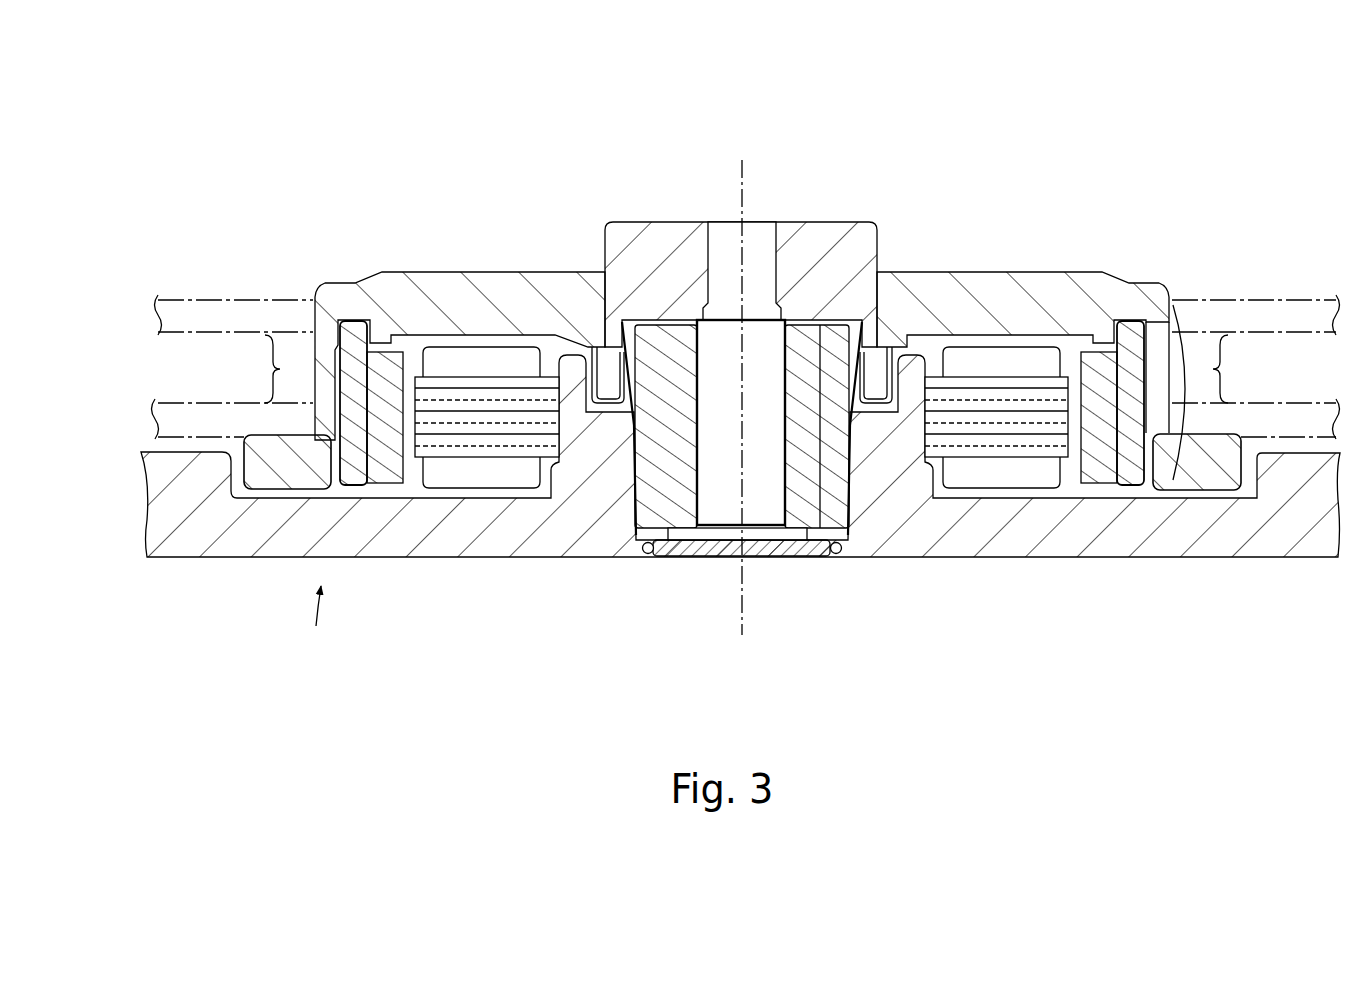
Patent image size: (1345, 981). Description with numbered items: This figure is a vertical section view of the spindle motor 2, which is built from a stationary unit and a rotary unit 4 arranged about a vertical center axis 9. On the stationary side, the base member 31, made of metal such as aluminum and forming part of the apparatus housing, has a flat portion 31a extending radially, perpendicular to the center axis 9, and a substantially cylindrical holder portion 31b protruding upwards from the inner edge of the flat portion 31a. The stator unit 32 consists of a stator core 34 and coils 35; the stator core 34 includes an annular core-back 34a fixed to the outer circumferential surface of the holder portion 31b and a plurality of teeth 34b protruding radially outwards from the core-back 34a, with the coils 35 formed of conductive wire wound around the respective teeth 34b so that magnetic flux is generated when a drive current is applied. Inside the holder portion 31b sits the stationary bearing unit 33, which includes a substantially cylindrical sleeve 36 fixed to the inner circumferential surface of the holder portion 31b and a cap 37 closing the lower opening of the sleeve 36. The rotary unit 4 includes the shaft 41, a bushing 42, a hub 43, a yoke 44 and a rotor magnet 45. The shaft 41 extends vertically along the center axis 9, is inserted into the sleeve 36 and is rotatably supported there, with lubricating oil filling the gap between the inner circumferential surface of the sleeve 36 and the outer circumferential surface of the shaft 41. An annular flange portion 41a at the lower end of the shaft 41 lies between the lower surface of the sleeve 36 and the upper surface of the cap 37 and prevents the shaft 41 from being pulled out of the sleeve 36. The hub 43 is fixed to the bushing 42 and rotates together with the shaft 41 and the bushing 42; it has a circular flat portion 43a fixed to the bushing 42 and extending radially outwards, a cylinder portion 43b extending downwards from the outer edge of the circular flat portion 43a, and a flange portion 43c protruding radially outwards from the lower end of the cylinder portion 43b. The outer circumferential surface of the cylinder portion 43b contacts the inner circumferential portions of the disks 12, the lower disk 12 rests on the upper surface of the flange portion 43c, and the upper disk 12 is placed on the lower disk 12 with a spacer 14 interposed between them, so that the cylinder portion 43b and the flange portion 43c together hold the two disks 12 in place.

The spindle motor 2 is at (336, 166).
The rotary unit 4 is at (518, 252).
The center axis 9 is at (740, 180).
The disk 12 is at (176, 301).
The spacer 14 is at (277, 354).
The base member 31 is at (453, 622).
The flat portion 31a is at (479, 534).
The holder portion 31b is at (586, 473).
The stator unit 32 is at (1057, 650).
The stationary bearing unit 33 is at (729, 622).
The stator core 34 is at (1018, 607).
The core-back 34a is at (939, 405).
The teeth 34b is at (984, 425).
The coils 35 is at (1037, 477).
The sleeve 36 is at (664, 505).
The cap 37 is at (718, 558).
The shaft 41 is at (763, 238).
The flange portion 41a is at (792, 532).
The bushing 42 is at (858, 240).
The hub 43 is at (1055, 197).
The circular flat portion 43a is at (1106, 334).
The cylinder portion 43b is at (1185, 392).
The flange portion 43c is at (1212, 450).
The yoke 44 is at (1132, 468).
The rotor magnet 45 is at (1094, 468).